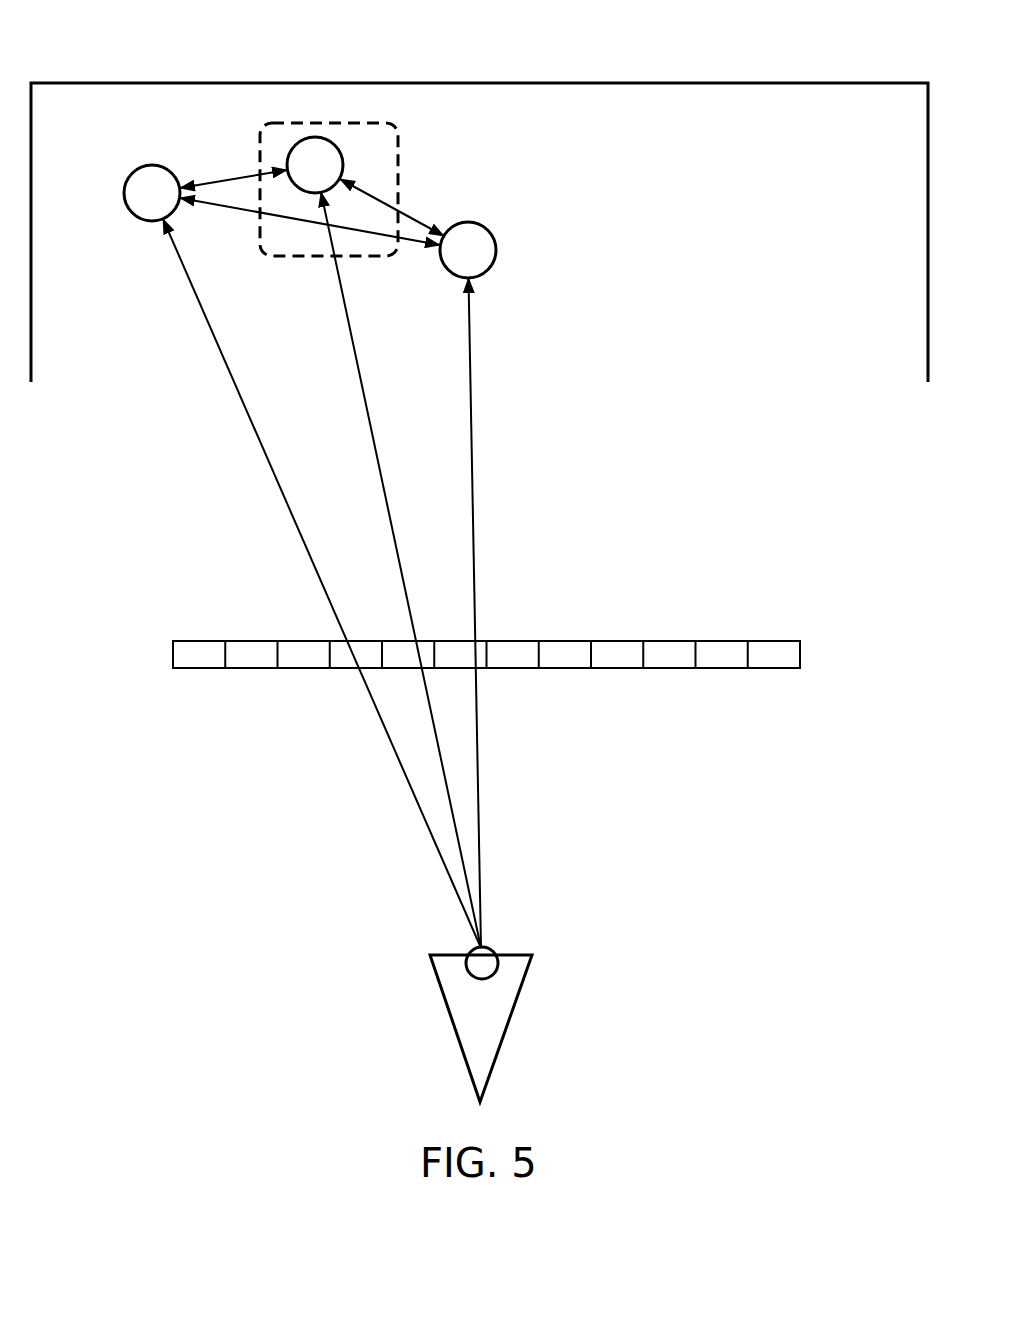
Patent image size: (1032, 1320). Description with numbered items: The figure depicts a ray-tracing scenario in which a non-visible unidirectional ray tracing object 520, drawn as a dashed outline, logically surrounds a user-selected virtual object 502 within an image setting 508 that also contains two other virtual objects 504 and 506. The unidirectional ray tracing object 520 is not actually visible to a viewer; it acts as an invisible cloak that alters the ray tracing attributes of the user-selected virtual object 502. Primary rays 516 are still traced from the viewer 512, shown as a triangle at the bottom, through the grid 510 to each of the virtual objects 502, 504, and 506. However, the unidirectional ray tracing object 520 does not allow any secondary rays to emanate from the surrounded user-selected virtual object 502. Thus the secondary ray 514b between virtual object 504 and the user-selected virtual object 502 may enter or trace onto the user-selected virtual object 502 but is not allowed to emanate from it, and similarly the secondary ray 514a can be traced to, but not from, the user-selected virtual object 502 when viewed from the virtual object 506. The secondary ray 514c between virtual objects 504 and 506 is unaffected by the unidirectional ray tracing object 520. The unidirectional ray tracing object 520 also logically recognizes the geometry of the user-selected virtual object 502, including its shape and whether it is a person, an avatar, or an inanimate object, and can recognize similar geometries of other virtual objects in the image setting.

The user-selected virtual object 502 is at (294, 144).
The virtual object 504 is at (130, 176).
The virtual object 506 is at (497, 251).
The boundary frame 508 is at (826, 82).
The grid 510 is at (423, 627).
The viewer 512 is at (516, 1008).
The bidirectional link 514a is at (440, 188).
The secondary ray 514b is at (201, 140).
The secondary ray 514c is at (310, 258).
The primary rays 516 is at (391, 570).
The unidirectional ray tracing object 520 is at (399, 132).